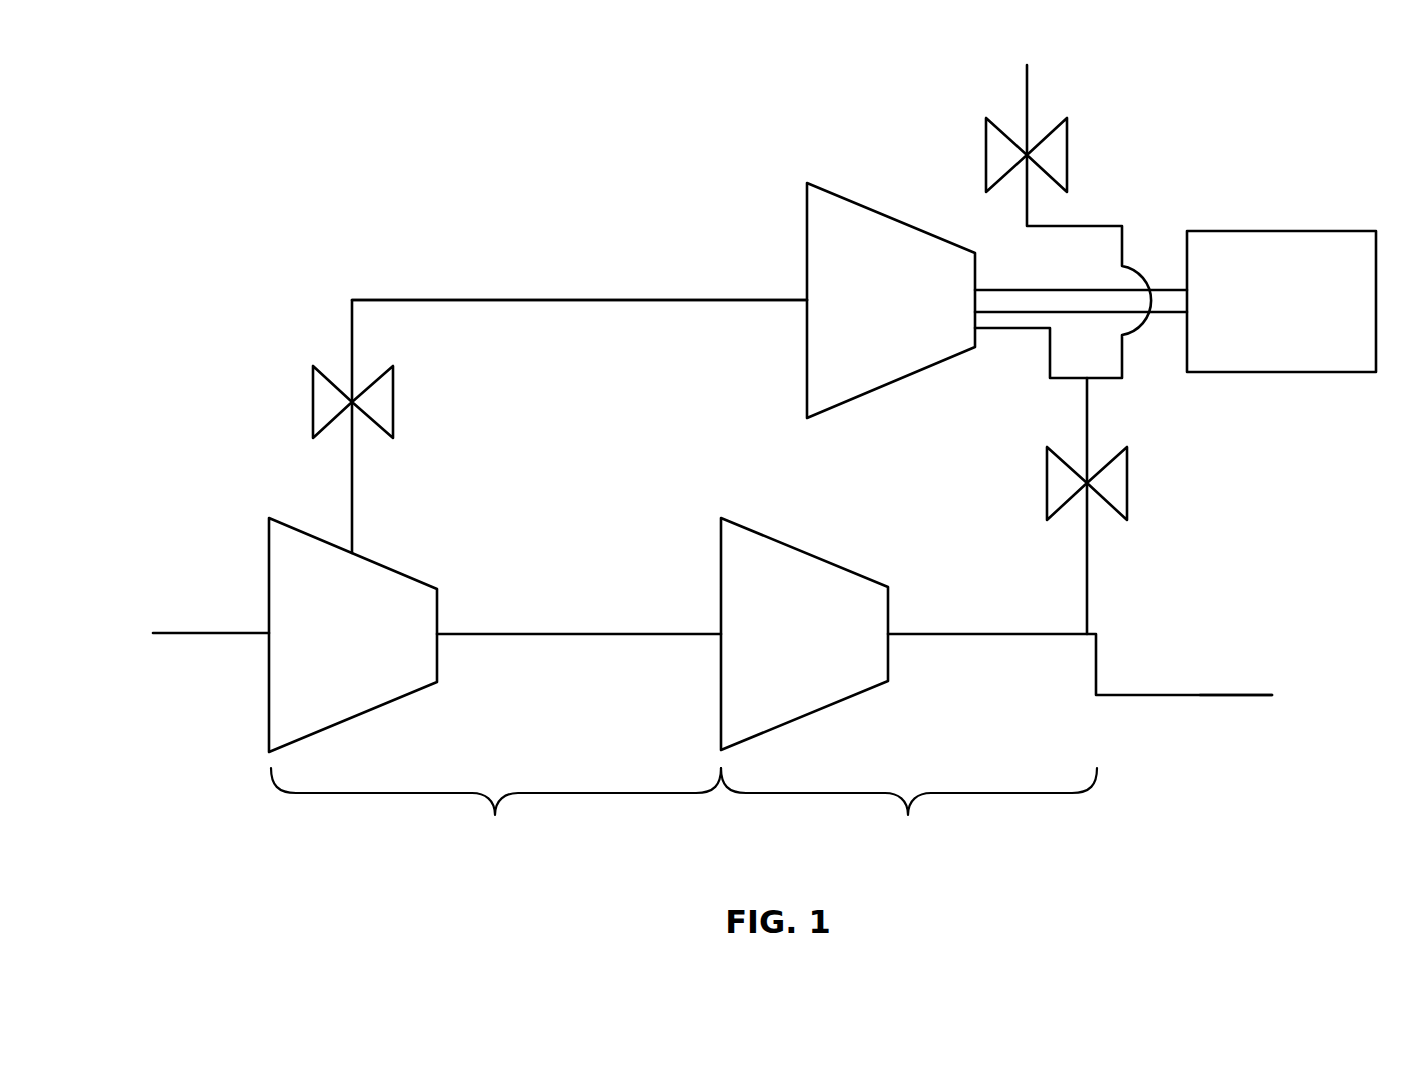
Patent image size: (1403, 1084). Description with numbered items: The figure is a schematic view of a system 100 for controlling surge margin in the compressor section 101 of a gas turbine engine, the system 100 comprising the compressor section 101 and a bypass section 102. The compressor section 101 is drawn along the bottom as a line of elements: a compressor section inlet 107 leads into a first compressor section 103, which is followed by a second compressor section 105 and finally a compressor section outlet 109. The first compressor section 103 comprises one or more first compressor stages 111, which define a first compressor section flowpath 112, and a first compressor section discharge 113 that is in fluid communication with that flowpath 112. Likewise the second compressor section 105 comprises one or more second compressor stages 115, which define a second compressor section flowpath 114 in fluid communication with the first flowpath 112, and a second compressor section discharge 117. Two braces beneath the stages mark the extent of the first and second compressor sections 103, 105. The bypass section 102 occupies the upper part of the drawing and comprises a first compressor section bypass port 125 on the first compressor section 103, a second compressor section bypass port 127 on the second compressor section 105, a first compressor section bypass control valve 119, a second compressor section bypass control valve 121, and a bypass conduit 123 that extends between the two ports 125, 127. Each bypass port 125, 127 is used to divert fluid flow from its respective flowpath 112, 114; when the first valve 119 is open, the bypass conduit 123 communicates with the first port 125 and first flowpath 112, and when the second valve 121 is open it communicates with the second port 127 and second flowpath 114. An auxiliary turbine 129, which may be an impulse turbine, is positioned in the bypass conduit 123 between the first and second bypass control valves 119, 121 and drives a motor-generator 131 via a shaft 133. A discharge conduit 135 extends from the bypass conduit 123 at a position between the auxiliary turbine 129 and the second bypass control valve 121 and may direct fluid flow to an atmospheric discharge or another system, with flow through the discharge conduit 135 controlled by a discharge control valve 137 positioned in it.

The system 100 is at (232, 151).
The compressor section 101 is at (224, 852).
The bypass section 102 is at (275, 312).
The first compressor section 103 is at (496, 812).
The second compressor section 105 is at (909, 812).
The compressor section inlet 107 is at (186, 647).
The compressor section outlet 109 is at (1222, 695).
The first compressor stages 111 is at (269, 575).
The first compressor section flowpath 112 is at (259, 706).
The first compressor section discharge 113 is at (563, 633).
The second compressor section flowpath 114 is at (710, 680).
The second compressor stages 115 is at (806, 548).
The second compressor section discharge 117 is at (983, 633).
The first compressor section bypass control valve 119 is at (313, 402).
The second compressor section bypass control valve 121 is at (1128, 483).
The bypass conduit 123 is at (386, 300).
The first compressor section bypass port 125 is at (346, 541).
The second compressor section bypass port 127 is at (1092, 627).
The auxiliary turbine 129 is at (807, 252).
The motor-generator 131 is at (1305, 231).
The shaft 133 is at (1166, 312).
The discharge conduit 135 is at (1085, 226).
The discharge control valve 137 is at (1067, 155).